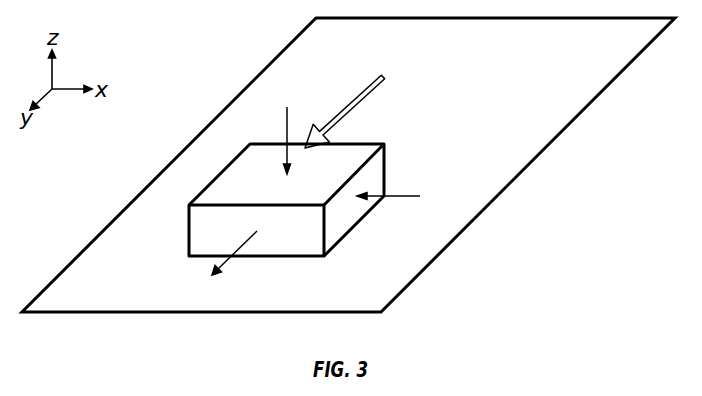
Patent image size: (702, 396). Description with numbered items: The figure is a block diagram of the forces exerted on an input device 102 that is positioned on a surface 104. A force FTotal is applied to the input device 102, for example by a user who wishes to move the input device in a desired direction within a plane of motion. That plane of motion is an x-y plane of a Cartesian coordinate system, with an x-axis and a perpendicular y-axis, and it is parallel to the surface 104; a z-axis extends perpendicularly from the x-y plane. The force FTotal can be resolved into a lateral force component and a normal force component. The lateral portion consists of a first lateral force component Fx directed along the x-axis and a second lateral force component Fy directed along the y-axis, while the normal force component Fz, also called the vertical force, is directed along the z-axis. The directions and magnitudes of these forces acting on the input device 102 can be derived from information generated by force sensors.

The input device 102 is at (268, 157).
The surface 104 is at (378, 300).
The normal force component Fz is at (289, 123).
The first lateral force component Fx is at (401, 199).
The second lateral force component Fy is at (225, 270).
The total force FTotal is at (357, 93).